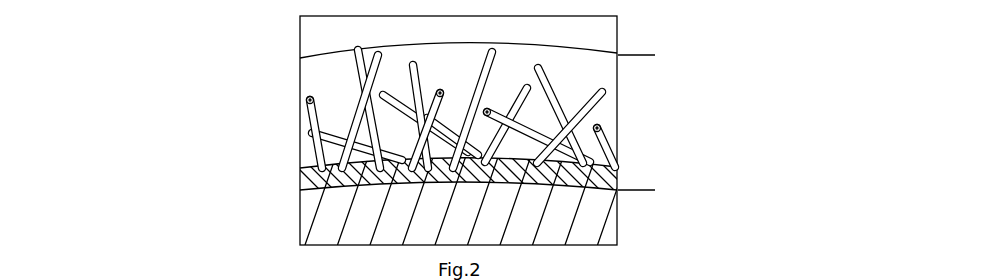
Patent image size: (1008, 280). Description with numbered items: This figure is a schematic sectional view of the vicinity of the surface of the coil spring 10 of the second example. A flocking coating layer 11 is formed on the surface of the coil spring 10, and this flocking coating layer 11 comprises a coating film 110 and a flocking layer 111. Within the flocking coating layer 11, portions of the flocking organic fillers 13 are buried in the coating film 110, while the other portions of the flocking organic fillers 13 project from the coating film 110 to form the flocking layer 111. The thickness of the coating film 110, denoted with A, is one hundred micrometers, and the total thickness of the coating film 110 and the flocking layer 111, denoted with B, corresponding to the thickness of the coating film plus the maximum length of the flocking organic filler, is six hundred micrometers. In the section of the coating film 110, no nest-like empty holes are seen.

The coil spring 10 is at (594, 212).
The flocking coating layer 11 is at (640, 120).
The flocking organic fillers 13 is at (481, 71).
The coating film 110 is at (284, 185).
The flocking layer 111 is at (284, 162).